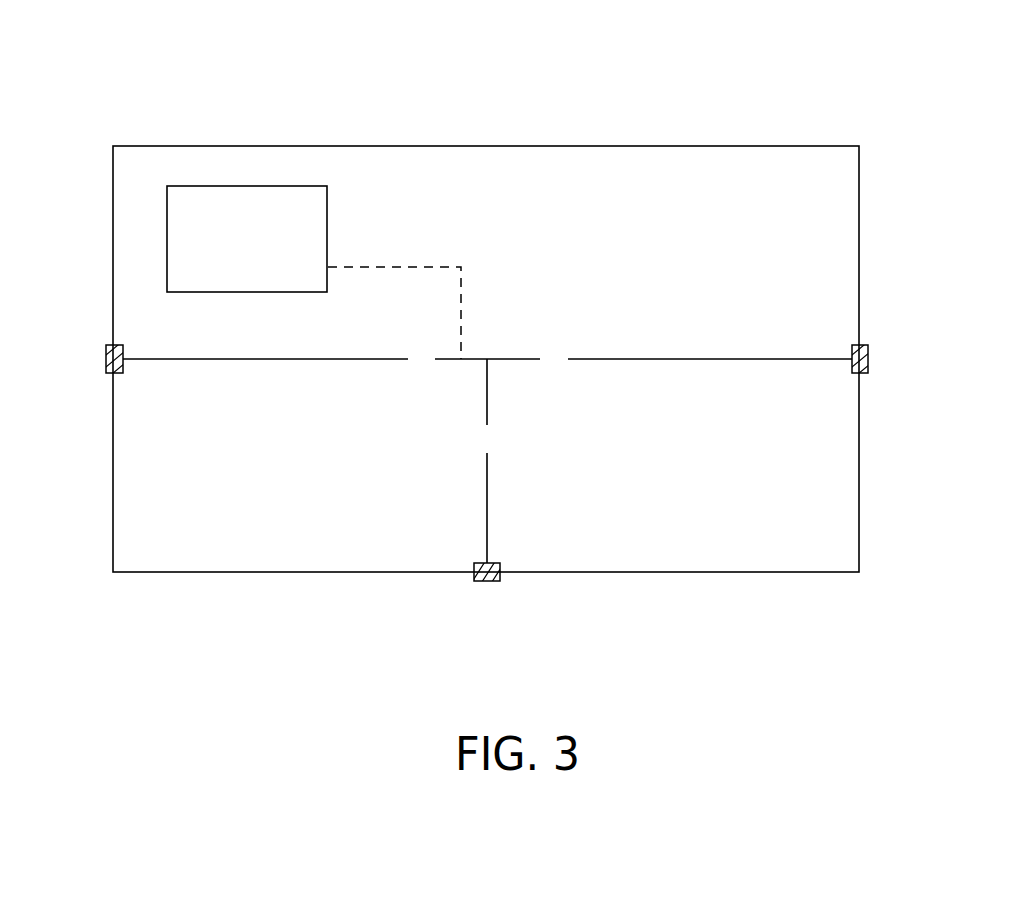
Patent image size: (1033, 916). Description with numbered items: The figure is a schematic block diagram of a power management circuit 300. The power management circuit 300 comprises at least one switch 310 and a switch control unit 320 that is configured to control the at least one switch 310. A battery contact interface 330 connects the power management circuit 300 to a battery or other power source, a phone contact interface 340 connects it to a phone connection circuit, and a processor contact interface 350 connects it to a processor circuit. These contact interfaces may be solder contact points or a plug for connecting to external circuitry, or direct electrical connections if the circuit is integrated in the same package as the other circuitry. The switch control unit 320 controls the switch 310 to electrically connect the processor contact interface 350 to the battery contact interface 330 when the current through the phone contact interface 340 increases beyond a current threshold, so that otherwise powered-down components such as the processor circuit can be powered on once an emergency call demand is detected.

The power management circuit 300 is at (242, 44).
The switch 310 is at (510, 358).
The switch control unit 320 is at (314, 272).
The battery contact interface 330 is at (869, 358).
The phone contact interface 340 is at (104, 360).
The processor contact interface 350 is at (487, 582).